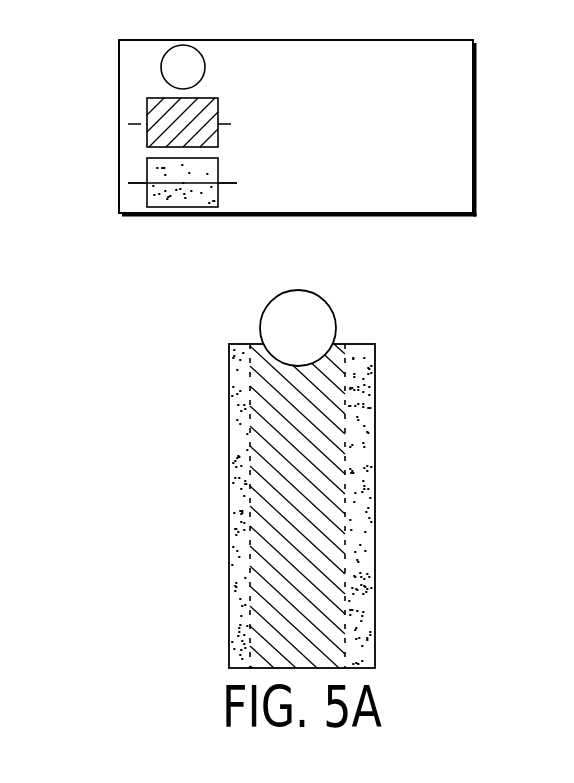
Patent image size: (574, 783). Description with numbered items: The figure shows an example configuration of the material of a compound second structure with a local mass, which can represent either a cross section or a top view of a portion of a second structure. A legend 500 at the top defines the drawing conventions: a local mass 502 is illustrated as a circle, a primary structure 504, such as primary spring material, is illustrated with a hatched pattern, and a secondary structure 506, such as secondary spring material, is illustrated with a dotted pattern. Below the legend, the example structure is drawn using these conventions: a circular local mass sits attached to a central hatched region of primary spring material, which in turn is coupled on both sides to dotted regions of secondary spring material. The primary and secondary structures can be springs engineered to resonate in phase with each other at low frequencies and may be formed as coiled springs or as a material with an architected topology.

The legend 500 is at (135, 40).
The local mass 502 is at (163, 71).
The primary structure 504 is at (147, 112).
The secondary structure 506 is at (147, 173).